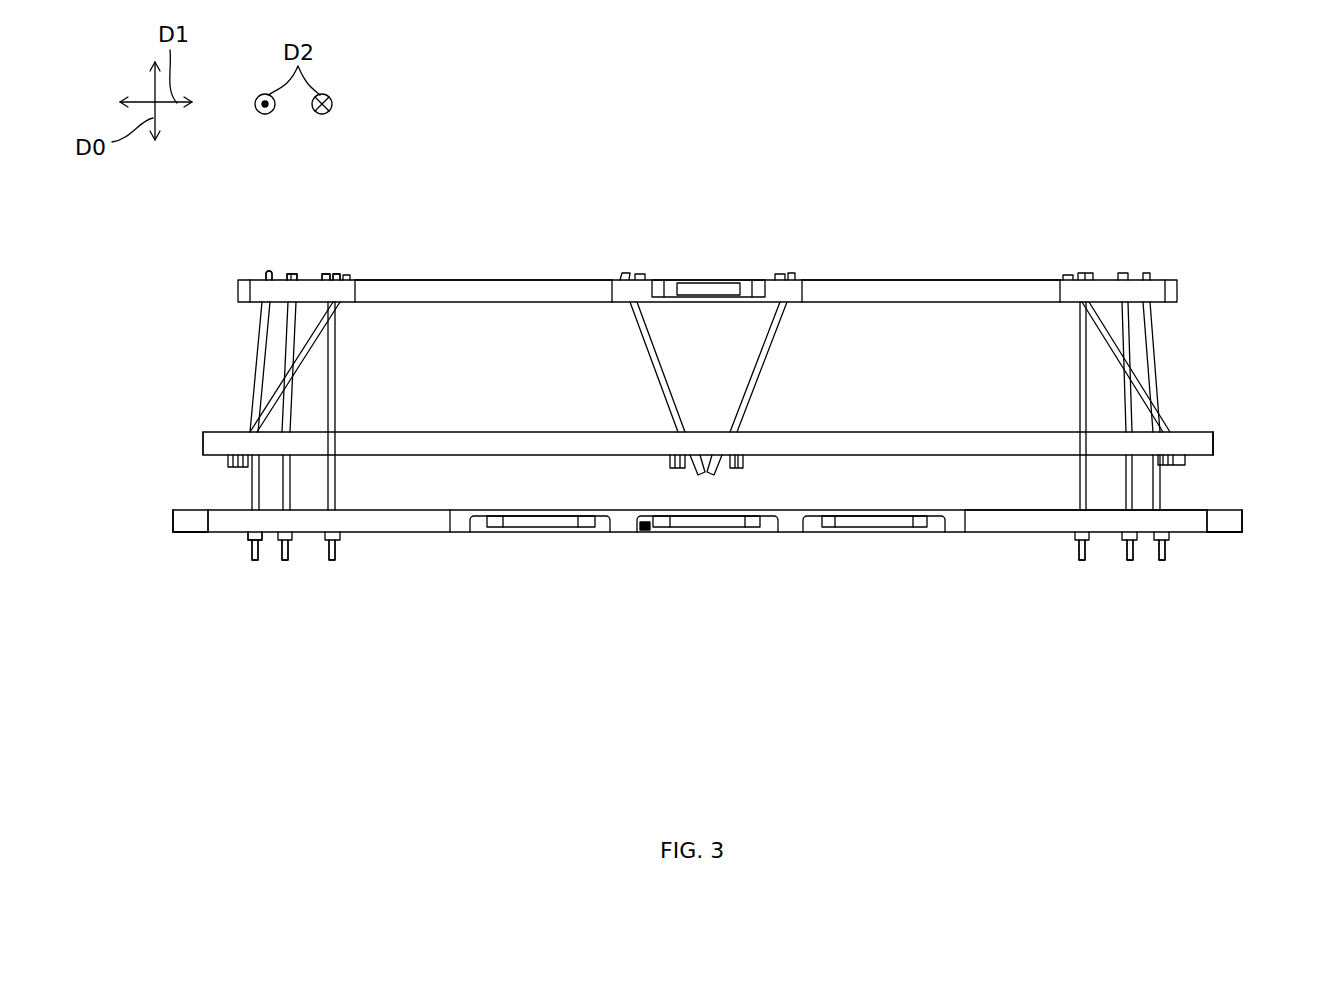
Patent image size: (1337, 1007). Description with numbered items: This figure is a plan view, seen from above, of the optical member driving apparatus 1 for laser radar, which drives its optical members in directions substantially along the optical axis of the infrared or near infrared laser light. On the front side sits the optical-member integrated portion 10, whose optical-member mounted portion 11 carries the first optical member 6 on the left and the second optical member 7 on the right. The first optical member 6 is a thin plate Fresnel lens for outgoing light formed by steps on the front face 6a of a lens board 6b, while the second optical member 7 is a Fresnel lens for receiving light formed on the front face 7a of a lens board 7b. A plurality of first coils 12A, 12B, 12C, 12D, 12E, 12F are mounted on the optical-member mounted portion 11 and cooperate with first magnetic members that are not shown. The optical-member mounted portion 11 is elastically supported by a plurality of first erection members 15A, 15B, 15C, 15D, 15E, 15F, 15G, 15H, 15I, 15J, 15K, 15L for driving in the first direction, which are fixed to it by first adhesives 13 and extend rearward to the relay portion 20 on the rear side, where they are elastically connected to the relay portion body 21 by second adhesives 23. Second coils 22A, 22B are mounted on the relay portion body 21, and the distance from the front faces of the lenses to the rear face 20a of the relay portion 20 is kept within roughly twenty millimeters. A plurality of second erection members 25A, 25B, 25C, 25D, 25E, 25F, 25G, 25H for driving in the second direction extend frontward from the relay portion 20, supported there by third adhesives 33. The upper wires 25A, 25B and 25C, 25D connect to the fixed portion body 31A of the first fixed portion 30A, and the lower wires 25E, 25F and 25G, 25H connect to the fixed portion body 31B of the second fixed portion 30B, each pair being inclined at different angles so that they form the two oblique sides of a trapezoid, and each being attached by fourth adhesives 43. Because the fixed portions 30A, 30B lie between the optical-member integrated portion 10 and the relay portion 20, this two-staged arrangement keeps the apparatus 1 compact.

The optical member driving apparatus for laser radar 1 is at (708, 705).
The first optical member 6 is at (180, 518).
The front face of first optical member 6a is at (200, 532).
The lens board of first optical member 6b is at (190, 532).
The second optical member 7 is at (1232, 515).
The front face of second optical member 7a is at (1215, 532).
The lens board of second optical member 7b is at (1232, 532).
The optical-member integrated portion 10 is at (215, 535).
The optical-member mounted portion 11 is at (1190, 522).
The first coil 12A is at (520, 525).
The first coil 12B is at (690, 525).
The first coil 12C is at (860, 525).
The first coil 12D is at (560, 525).
The first coil 12E is at (725, 525).
The first coil 12F is at (895, 525).
The first adhesive 13 is at (252, 548).
The first erection member 15A is at (258, 562).
The first erection member 15B is at (288, 562).
The first erection member 15C is at (332, 562).
The first erection member 15D is at (1082, 562).
The first erection member 15E is at (1128, 562).
The first erection member 15F is at (1162, 562).
The first erection member 15G is at (255, 562).
The first erection member 15H is at (285, 562).
The first erection member 15I is at (335, 562).
The first erection member 15J is at (1080, 562).
The first erection member 15K is at (1128, 562).
The first erection member 15L is at (1162, 562).
The relay portion 20 is at (402, 280).
The rear face of relay portion 20a is at (458, 280).
The relay portion body 21 is at (955, 290).
The second coil 22A is at (700, 282).
The second coil 22B is at (718, 283).
The second adhesive 23 is at (283, 273).
The second erection member 25A is at (283, 383).
The second erection member 25B is at (653, 362).
The second erection member 25C is at (762, 362).
The second erection member 25D is at (1135, 388).
The second erection member 25E is at (303, 336).
The second erection member 25F is at (650, 382).
The second erection member 25G is at (762, 383).
The second erection member 25H is at (1117, 338).
The first fixed portion 30A is at (205, 437).
The second fixed portion 30B is at (1215, 438).
The fixed portion body of first fixed portion 31A is at (210, 447).
The fixed portion body of second fixed portion 31B is at (1215, 452).
The third adhesive 33 is at (323, 273).
The fourth adhesive 43 is at (242, 465).